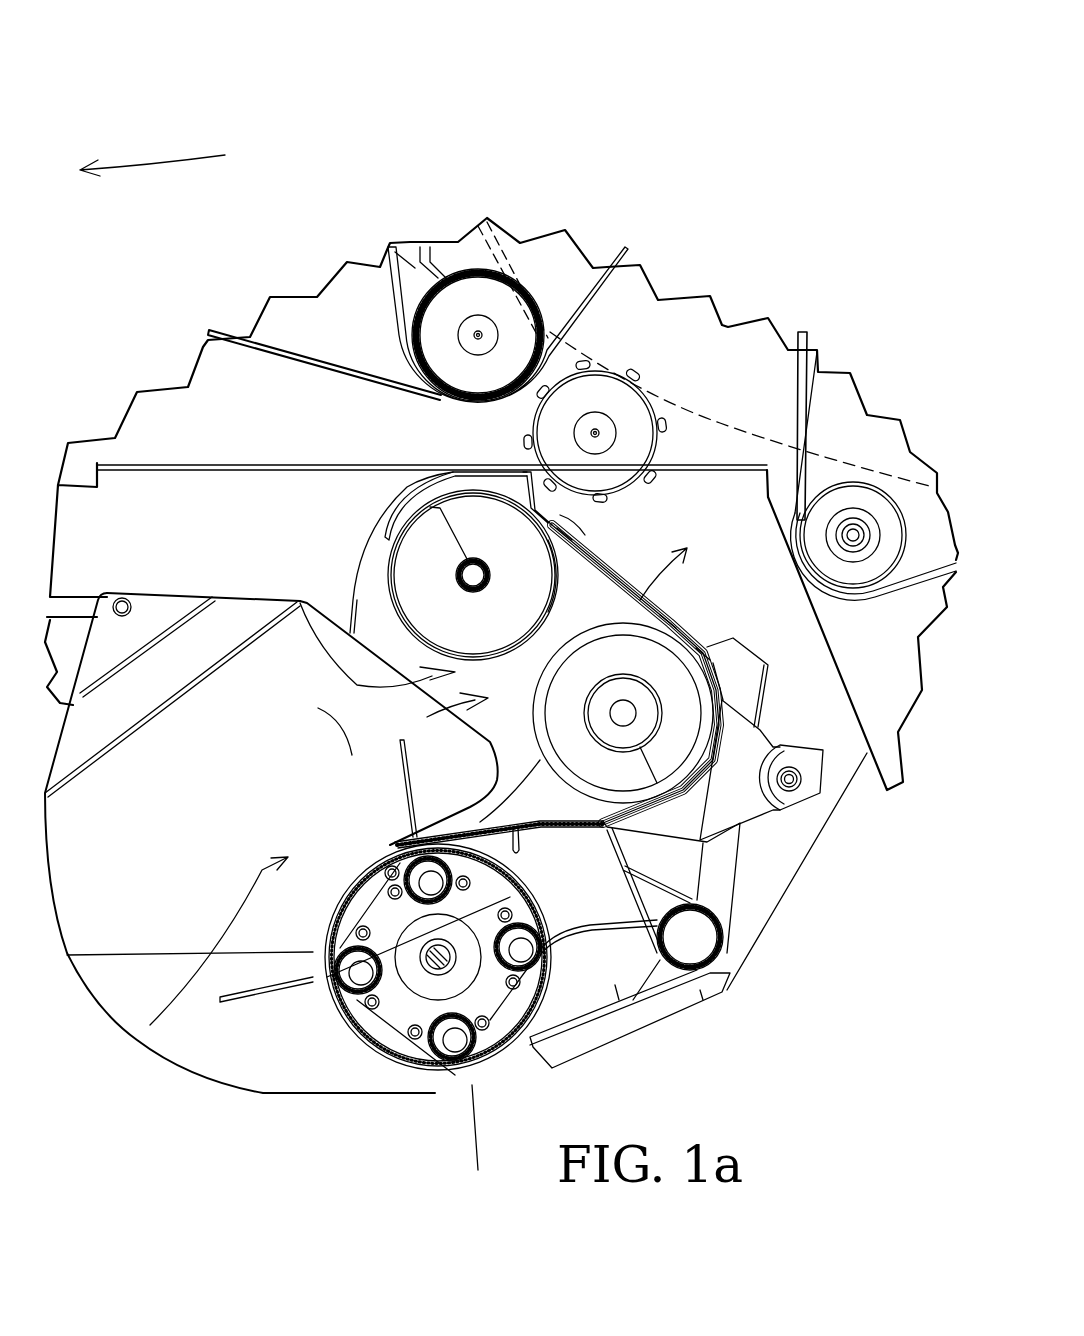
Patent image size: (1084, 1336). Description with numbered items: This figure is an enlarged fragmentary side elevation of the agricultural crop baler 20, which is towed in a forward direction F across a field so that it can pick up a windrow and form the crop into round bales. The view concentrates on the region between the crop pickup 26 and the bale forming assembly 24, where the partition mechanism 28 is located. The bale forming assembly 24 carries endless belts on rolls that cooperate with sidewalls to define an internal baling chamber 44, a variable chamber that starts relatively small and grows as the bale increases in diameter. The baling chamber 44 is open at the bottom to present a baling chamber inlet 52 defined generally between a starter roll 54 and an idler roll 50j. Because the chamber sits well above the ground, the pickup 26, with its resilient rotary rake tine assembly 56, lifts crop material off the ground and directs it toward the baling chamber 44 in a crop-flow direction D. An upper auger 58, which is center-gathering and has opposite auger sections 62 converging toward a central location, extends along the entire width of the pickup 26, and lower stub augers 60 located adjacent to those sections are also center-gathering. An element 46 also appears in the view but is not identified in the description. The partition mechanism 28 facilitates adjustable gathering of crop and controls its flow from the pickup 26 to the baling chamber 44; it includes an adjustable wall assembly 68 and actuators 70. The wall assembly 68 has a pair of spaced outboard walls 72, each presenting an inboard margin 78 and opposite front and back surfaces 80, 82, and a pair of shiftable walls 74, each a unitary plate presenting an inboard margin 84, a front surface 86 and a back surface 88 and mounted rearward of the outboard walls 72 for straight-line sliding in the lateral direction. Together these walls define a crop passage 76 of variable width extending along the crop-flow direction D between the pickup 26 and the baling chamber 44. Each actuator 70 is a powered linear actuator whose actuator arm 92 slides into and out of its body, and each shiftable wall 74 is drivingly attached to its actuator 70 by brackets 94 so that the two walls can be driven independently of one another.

The baler 20 is at (792, 81).
The bale forming assembly 24 is at (802, 382).
The crop pickup 26 is at (405, 1075).
The partition mechanism 28 is at (720, 820).
The baling chamber 44 is at (535, 247).
The feed roller 46 is at (455, 300).
The idler roll 50j is at (867, 502).
The baling chamber inlet 52 is at (729, 352).
The starter roll 54 is at (607, 388).
The rotary rake tine assembly 56 is at (490, 983).
The upper auger 58 is at (425, 527).
The lower stub augers 60 is at (668, 662).
The auger sections 62 is at (407, 565).
The adjustable wall assembly 68 is at (577, 573).
The actuators 70 is at (813, 810).
The outboard walls 72 is at (573, 570).
The shiftable walls 74 is at (672, 610).
The crop passage 76 is at (303, 603).
The inboard margin 78 is at (700, 640).
The front surface 80 is at (557, 580).
The back surface 82 is at (560, 497).
The inboard margin 84 is at (713, 663).
The front surface 86 is at (567, 547).
The back surface 88 is at (550, 527).
The actuator arm 92 is at (803, 783).
The brackets 94 is at (733, 750).
The crop-flow direction D is at (323, 725).
The forward direction F is at (152, 147).